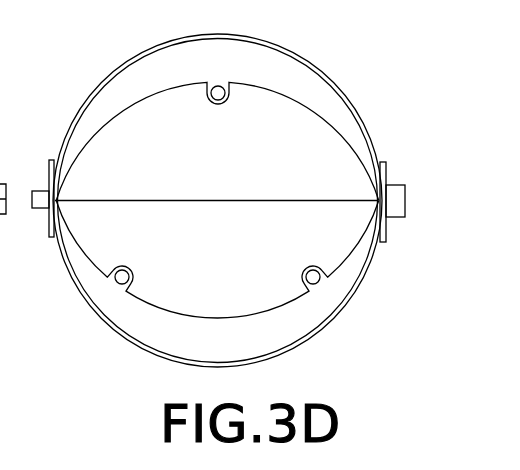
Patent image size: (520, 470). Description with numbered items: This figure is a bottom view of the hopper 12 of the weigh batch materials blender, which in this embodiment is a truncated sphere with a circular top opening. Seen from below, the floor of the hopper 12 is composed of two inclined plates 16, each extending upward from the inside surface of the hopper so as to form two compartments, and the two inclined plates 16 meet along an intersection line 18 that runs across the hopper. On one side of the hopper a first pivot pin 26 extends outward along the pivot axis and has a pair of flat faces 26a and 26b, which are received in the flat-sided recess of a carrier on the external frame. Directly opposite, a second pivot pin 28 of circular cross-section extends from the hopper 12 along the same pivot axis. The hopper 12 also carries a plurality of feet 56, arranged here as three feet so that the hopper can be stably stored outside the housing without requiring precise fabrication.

The hopper 12 is at (325, 71).
The inclined plates 16 is at (332, 147).
The intersection line 18 is at (177, 200).
The first pivot pin 26 is at (48, 243).
The flat face 26a is at (32, 199).
The flat face 26b is at (49, 191).
The second pivot pin 28 is at (395, 184).
The feet 56 is at (219, 86).